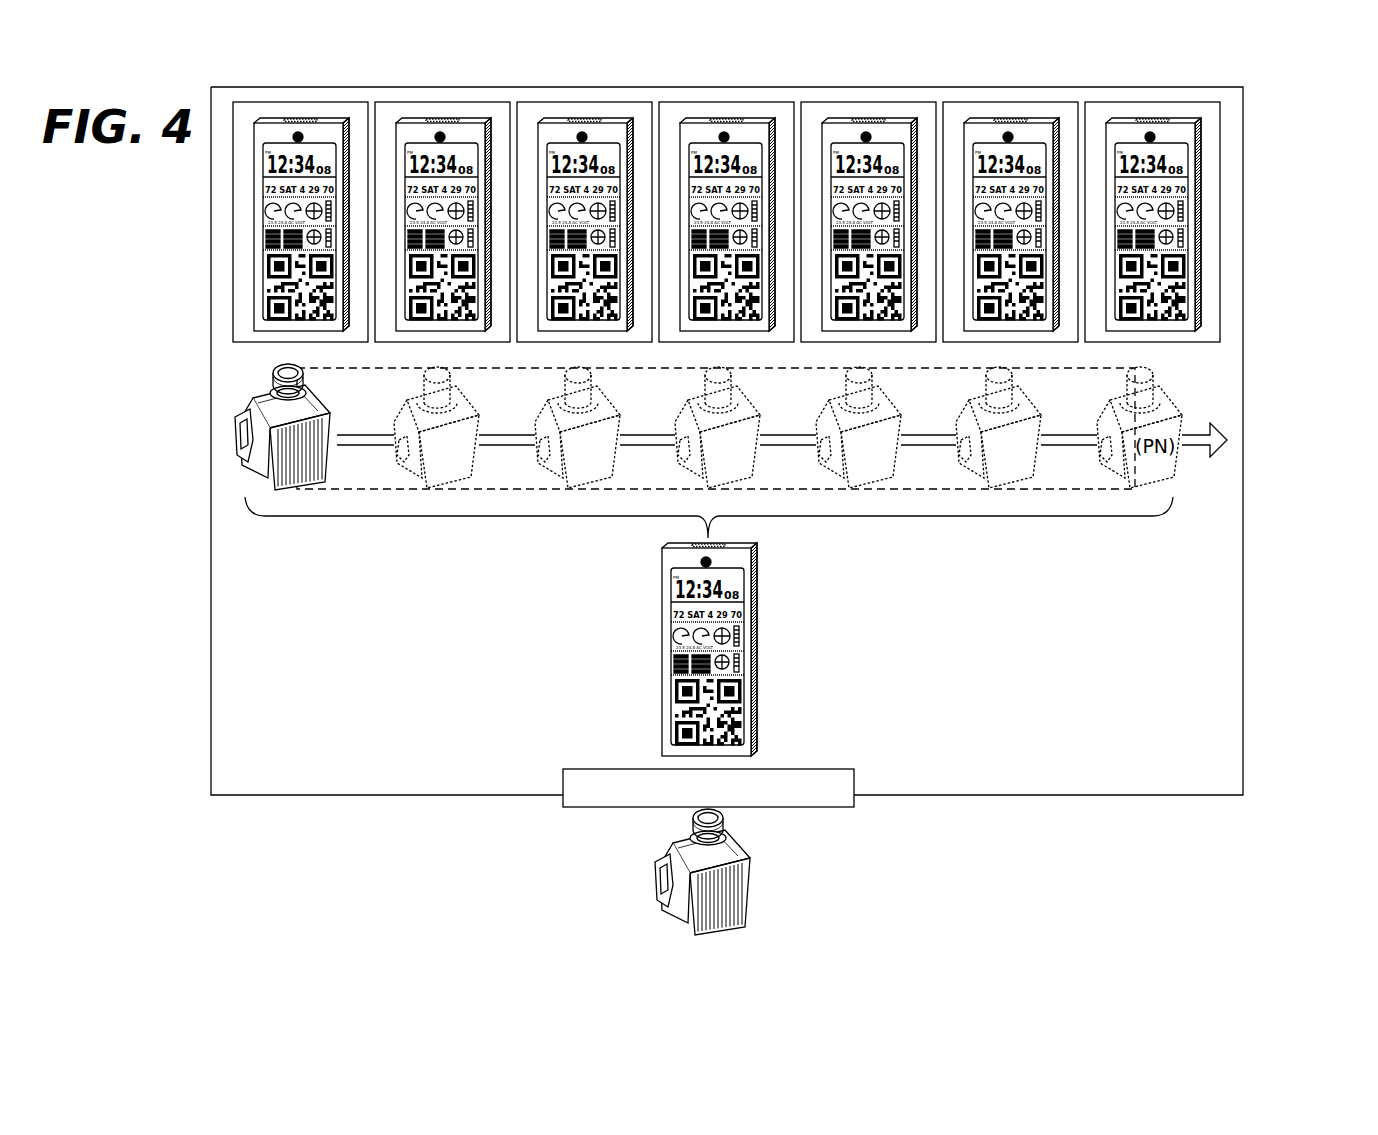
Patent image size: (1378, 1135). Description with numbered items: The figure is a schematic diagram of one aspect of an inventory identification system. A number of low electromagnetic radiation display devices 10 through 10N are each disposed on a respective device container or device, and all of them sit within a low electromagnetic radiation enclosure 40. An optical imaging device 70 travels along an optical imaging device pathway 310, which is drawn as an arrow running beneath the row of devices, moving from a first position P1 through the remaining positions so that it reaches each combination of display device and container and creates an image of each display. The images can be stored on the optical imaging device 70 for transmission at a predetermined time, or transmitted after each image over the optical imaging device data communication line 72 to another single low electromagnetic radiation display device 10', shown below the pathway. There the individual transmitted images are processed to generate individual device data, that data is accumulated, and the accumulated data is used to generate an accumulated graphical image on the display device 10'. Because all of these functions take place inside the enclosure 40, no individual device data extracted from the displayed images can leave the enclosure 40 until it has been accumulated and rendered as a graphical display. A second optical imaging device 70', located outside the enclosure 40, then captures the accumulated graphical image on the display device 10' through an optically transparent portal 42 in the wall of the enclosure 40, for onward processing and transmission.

The low electromagnetic radiation display device 10 is at (254, 222).
The low electromagnetic radiation display device 10N is at (1231, 222).
The low electromagnetic radiation enclosure 40 is at (210, 627).
The optically transparent portal 42 is at (603, 807).
The optical imaging device 70 is at (239, 427).
The second optical imaging device 70' is at (662, 872).
The optical imaging device data communication line 72 is at (397, 517).
The position P1 is at (272, 482).
The optical imaging device pathway 310 is at (1192, 443).
The other single low electromagnetic radiation display device 10' is at (658, 649).